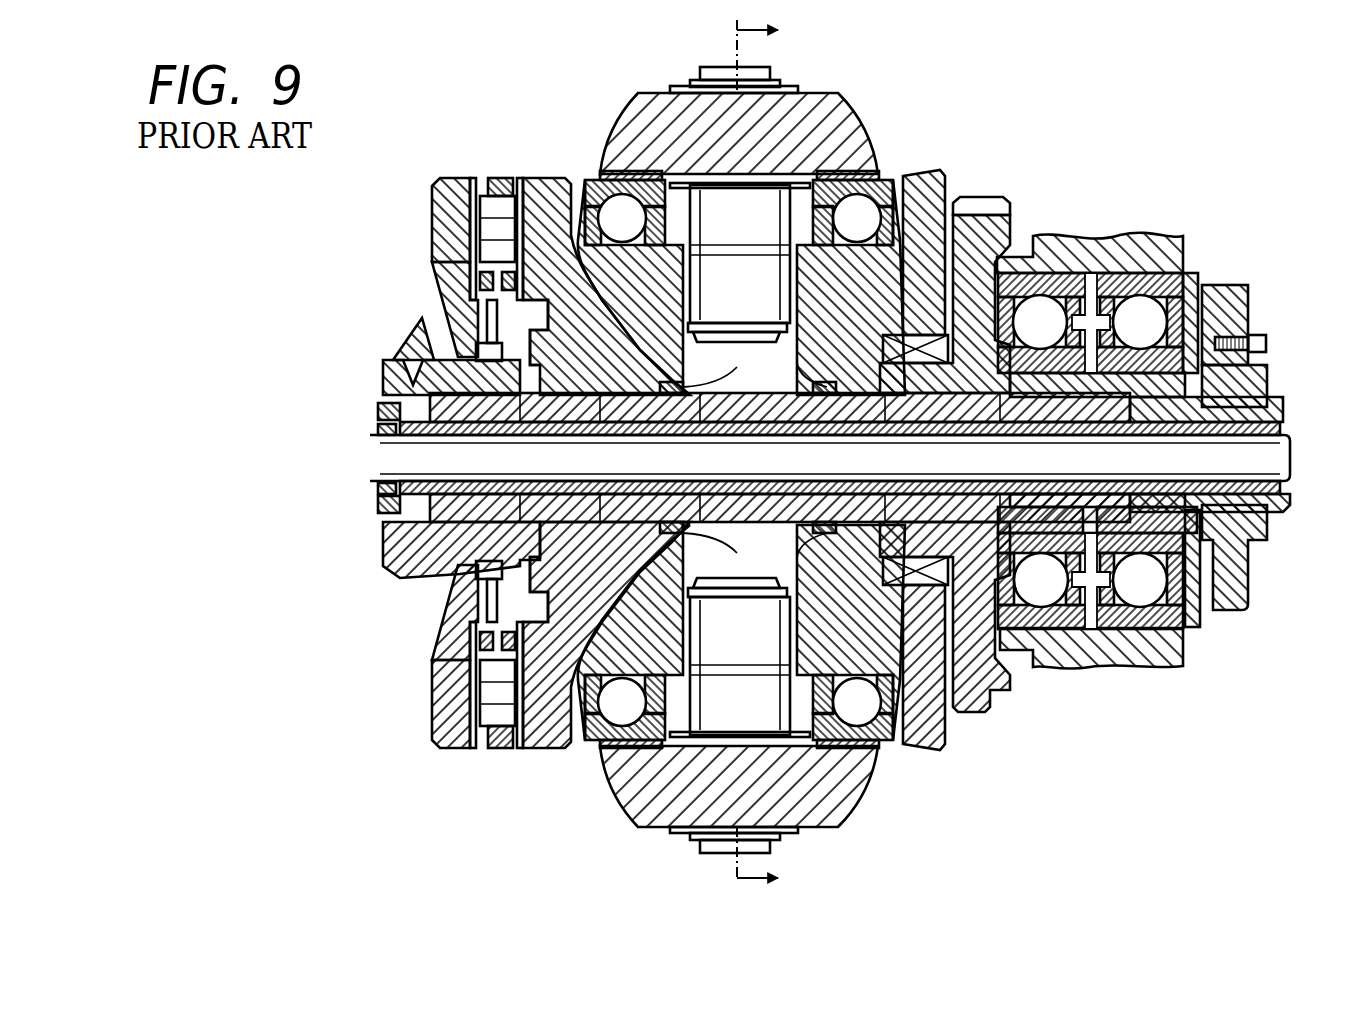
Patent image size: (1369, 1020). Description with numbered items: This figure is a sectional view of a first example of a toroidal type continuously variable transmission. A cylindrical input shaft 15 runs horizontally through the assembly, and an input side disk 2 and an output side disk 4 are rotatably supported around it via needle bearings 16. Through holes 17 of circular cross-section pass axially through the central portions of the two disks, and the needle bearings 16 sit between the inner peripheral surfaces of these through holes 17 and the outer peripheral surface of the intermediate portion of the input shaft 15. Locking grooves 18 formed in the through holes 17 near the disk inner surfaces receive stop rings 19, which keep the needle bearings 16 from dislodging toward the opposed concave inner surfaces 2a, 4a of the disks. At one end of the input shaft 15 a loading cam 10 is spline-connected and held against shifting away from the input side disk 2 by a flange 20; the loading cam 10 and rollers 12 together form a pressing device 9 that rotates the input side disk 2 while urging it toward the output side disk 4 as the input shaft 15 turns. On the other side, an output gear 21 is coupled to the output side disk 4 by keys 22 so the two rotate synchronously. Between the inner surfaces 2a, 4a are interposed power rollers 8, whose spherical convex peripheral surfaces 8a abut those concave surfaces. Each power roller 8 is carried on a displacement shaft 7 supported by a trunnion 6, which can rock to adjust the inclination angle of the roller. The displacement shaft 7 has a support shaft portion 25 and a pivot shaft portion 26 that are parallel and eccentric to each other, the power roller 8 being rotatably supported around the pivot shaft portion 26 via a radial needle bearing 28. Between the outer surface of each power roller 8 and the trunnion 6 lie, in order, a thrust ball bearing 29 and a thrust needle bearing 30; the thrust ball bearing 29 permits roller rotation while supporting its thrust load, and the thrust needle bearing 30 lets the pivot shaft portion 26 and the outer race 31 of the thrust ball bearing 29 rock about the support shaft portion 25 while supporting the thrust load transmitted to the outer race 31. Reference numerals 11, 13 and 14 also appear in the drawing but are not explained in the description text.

The input side disk 2 is at (552, 183).
The inner surface of input side disk 2a is at (625, 394).
The output side disk 4 is at (930, 172).
The inner surface of output side disk 4a is at (975, 240).
The trunnion 6 is at (670, 115).
The displacement shaft 7 is at (753, 192).
The power roller 8 is at (570, 315).
The peripheral surface of power roller 8a is at (540, 275).
The pressing device 9 is at (448, 223).
The loading cam 10 is at (447, 180).
The spacer 11 is at (500, 755).
The roller 12 is at (500, 200).
The side plate 13 is at (470, 173).
The side plate 14 is at (523, 173).
The input shaft 15 is at (1283, 428).
The needle bearing 16 is at (722, 345).
The through hole 17 is at (717, 600).
The locking groove 18 is at (829, 437).
The stop ring 19 is at (760, 494).
The flange 20 is at (830, 458).
The output gear 21 is at (987, 203).
The key 22 is at (933, 535).
The support shaft portion 25 is at (762, 75).
The pivot shaft portion 26 is at (713, 277).
The radial needle bearing 28 is at (783, 277).
The thrust ball bearing 29 is at (883, 200).
The thrust needle bearing 30 is at (862, 200).
The outer race 31 is at (603, 170).